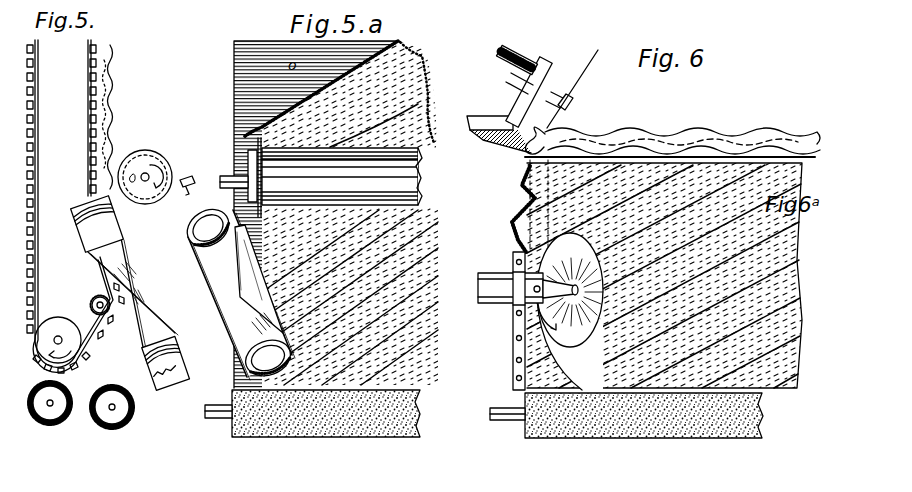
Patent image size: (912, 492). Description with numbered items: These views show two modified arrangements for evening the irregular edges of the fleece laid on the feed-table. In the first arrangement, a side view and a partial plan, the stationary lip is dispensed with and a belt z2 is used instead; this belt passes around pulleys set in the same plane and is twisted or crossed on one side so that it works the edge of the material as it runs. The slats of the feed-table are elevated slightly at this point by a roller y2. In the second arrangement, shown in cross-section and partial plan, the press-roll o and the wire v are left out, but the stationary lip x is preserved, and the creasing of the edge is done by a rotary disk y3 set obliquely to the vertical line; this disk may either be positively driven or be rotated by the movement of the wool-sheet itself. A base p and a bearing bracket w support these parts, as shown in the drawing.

In FIG. 5, the wire v is at (187, 176).
In FIG. 5A, the wire v is at (262, 233).
In FIG. 5, the bracket / bearing w is at (194, 179).
In FIG. 5A, the bracket / bearing w is at (262, 190).
In FIG. 5A, the press-roll o is at (348, 178).
In FIG. 5A, the base / bed p is at (420, 420).
In FIG. 6A, the base / bed p is at (762, 419).
In FIG. 6A, the stationary lip x is at (533, 374).
In FIG. 5, the roller y2 is at (92, 304).
In FIG. 6, the rotary disk y3 is at (579, 78).
In FIG. 6A, the rotary disk y3 is at (570, 311).
In FIG. 5, the belt z2 is at (137, 297).
In FIG. 5A, the belt z2 is at (214, 303).